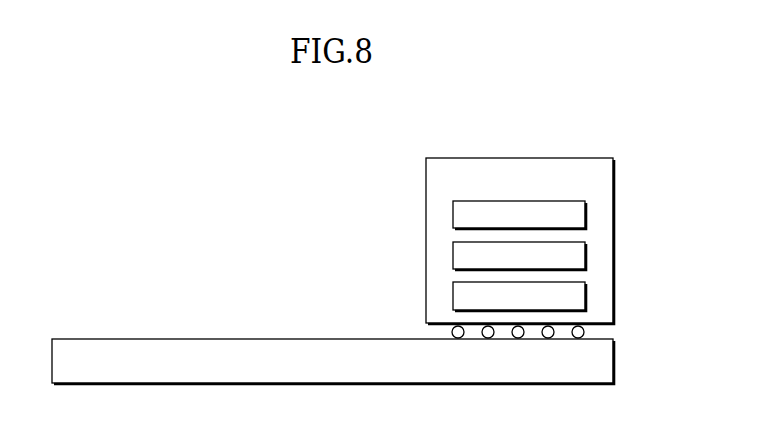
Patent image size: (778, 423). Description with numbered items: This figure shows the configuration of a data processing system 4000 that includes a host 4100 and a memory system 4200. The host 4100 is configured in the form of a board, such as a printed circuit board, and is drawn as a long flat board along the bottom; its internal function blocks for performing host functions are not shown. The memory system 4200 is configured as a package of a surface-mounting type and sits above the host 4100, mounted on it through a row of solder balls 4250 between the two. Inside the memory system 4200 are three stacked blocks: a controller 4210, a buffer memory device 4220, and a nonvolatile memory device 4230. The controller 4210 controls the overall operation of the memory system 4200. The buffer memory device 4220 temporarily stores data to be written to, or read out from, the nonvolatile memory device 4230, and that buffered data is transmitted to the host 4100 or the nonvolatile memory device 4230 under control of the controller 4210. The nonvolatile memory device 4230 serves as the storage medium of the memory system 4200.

The data processing system 4000 is at (126, 134).
The host 4100 is at (333, 361).
The memory system 4200 is at (520, 241).
The controller 4210 is at (519, 215).
The buffer memory device 4220 is at (519, 256).
The nonvolatile memory device 4230 is at (519, 296).
The solder balls 4250 is at (597, 333).